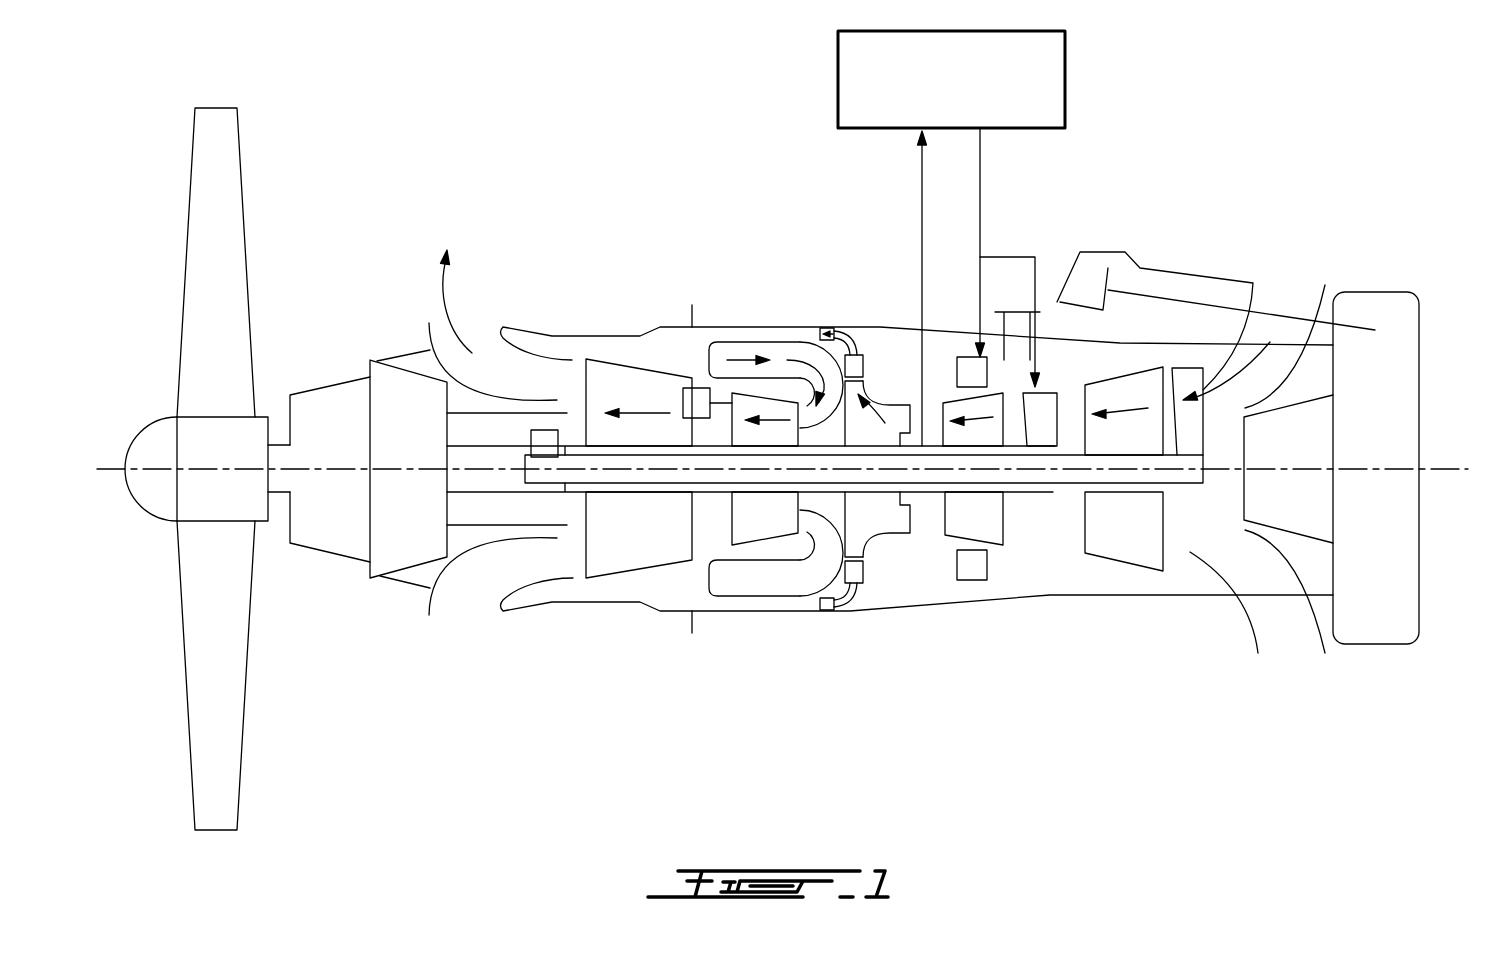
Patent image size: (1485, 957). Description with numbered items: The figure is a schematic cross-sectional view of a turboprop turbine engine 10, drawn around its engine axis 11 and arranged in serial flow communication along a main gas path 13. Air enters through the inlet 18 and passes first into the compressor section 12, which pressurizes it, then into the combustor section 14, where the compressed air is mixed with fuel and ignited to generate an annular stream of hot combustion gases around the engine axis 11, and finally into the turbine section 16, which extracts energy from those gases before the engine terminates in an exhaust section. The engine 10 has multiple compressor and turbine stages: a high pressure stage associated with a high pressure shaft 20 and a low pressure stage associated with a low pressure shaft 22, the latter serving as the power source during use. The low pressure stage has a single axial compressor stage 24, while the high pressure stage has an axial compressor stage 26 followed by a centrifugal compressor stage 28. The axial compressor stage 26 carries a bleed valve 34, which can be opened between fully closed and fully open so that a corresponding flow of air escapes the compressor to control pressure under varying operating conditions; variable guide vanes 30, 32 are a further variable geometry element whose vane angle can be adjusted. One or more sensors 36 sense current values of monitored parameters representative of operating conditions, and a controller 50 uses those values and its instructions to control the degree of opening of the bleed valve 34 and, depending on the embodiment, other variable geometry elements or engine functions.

The turbine engine 10 is at (321, 132).
The engine axis 11 is at (1445, 468).
The compressor section 12 is at (1165, 648).
The main gas path 13 is at (662, 392).
The combustor section 14 is at (782, 340).
The turbine section 16 is at (798, 648).
The air inlet 18 is at (455, 612).
The high pressure shaft 20 is at (928, 496).
The low pressure shaft 22 is at (1121, 510).
The compressor stage 24 is at (1141, 355).
The axial compressor stage 26 is at (980, 530).
The centrifugal compressor stage 28 is at (902, 520).
The variable guide vane 30 is at (1042, 392).
The variable guide vane 32 is at (1207, 363).
The bleed valve 34 is at (967, 357).
The sensor 36 is at (548, 430).
The controller 50 is at (1047, 78).